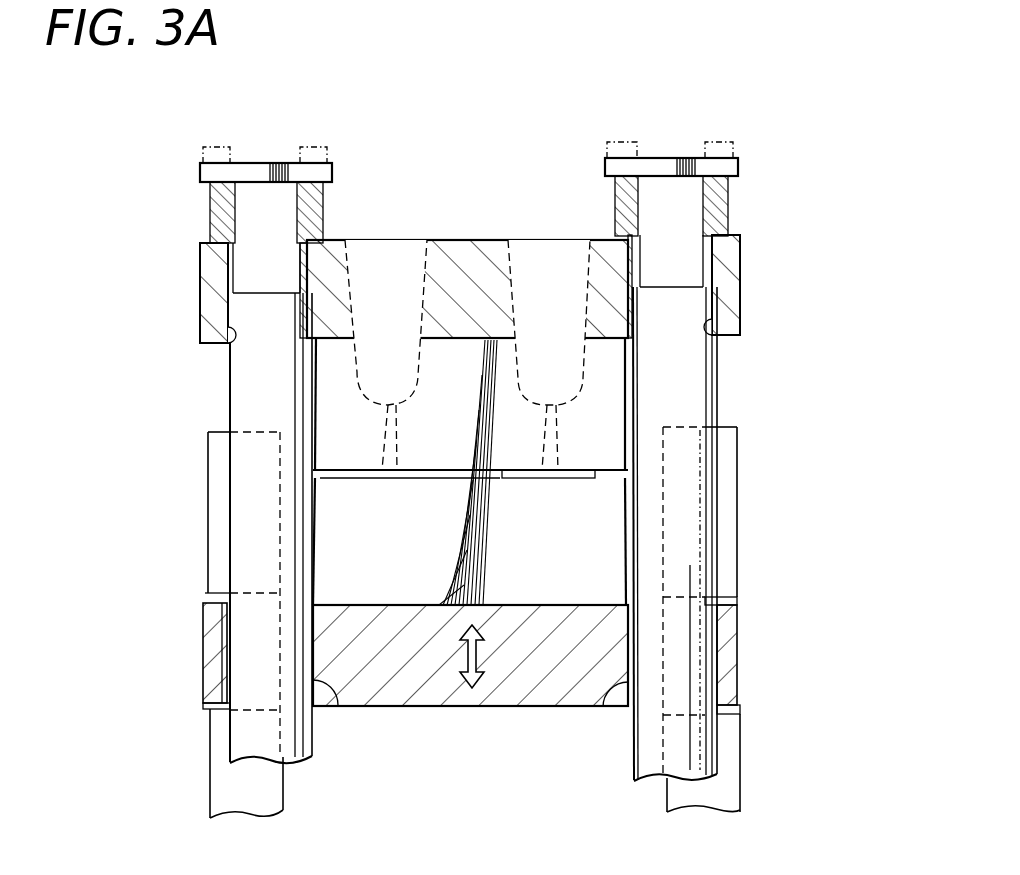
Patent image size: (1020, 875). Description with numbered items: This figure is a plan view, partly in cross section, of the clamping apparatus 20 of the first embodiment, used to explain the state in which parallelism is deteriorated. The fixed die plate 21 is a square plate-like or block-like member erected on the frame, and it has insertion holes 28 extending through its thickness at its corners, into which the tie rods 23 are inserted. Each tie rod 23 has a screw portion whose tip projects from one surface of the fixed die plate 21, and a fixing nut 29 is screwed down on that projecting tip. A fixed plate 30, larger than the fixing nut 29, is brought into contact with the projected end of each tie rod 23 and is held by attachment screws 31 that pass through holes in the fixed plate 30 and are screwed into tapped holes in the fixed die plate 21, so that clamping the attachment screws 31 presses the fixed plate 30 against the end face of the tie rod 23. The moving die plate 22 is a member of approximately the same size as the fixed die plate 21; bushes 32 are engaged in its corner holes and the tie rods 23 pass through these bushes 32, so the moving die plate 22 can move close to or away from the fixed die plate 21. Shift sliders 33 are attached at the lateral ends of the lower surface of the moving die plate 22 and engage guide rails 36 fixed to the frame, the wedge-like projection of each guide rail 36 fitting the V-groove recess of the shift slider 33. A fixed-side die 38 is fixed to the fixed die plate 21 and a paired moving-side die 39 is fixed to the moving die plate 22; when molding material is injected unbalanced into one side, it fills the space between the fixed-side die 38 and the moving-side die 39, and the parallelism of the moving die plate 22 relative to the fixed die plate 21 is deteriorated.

The nozzle assembly 20 is at (393, 133).
The fixed die plate 21 is at (472, 258).
The moving die plate 22 is at (403, 685).
The tie rod 23 is at (242, 397).
The insertion hole 28 is at (227, 353).
The fixing nut 29 is at (210, 207).
The fixed plate 30 is at (262, 172).
The attachment screw 31 is at (208, 140).
The bush 32 is at (328, 700).
The shift slider 33 is at (205, 707).
The guide rail 36 is at (223, 787).
The fixed-side die 38 is at (333, 438).
The moving-side die 39 is at (342, 530).